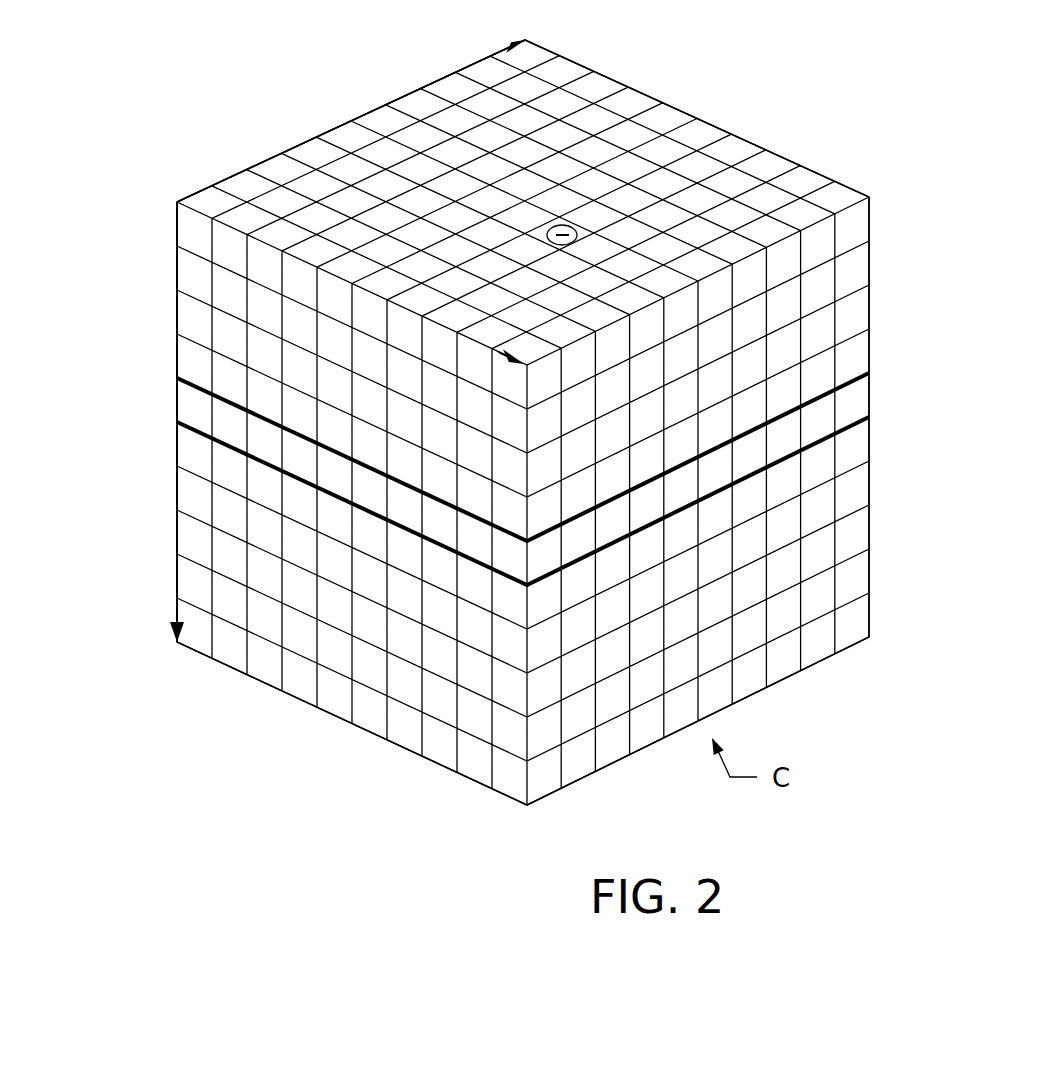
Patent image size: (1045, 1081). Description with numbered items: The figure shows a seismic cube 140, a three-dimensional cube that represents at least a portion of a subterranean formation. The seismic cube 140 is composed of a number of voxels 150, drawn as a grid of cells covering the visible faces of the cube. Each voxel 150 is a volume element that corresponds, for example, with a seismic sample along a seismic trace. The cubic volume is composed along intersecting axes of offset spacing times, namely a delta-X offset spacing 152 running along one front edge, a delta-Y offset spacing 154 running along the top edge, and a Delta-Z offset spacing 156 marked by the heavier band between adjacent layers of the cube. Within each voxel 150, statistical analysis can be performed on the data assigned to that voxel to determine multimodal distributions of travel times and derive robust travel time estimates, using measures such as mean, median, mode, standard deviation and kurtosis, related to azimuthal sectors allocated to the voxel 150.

The seismic cube 140 is at (815, 104).
The voxel 150 is at (560, 68).
The delta-X offset spacing 152 is at (210, 220).
The delta-Y offset spacing 154 is at (363, 113).
The Delta-Z offset spacing 156 is at (175, 450).